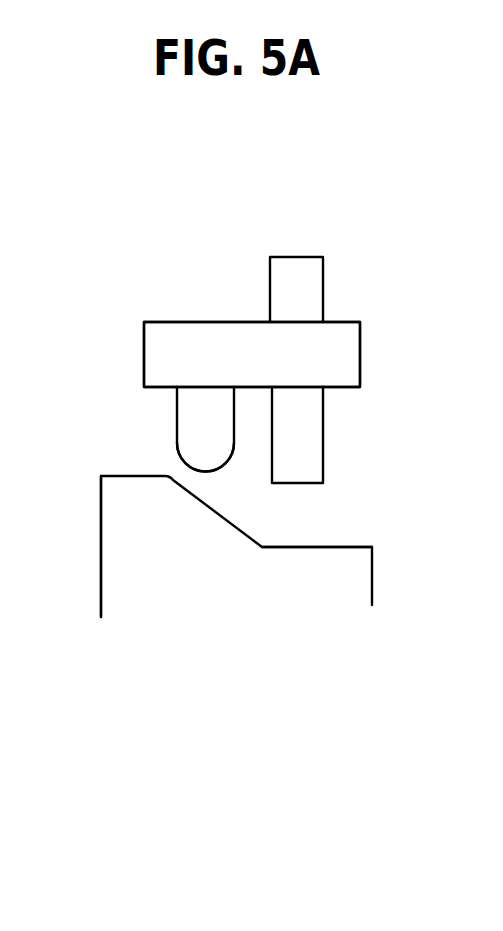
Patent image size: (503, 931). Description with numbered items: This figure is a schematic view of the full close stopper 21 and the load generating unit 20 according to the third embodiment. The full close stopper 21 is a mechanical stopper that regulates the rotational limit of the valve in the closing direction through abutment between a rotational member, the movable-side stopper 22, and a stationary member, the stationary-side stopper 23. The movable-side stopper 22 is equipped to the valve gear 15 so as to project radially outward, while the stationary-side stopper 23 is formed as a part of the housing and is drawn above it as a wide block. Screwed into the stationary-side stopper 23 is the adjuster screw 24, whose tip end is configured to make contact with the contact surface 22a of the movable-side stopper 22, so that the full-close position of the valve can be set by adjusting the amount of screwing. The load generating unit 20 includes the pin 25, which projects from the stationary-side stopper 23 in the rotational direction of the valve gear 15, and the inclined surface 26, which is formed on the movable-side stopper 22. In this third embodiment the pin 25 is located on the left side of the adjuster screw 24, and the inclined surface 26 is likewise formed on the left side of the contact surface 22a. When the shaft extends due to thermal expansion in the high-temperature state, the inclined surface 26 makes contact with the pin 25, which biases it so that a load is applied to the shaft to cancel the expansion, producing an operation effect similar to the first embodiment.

The valve gear 15 is at (152, 585).
The load generating unit 20 is at (98, 377).
The full close stopper 21 is at (426, 346).
The movable-side stopper 22 is at (355, 588).
The contact surface 22a is at (300, 547).
The stationary-side stopper 23 is at (348, 355).
The adjuster screw 24 is at (310, 443).
The pin 25 is at (182, 413).
The inclined surface 26 is at (192, 487).